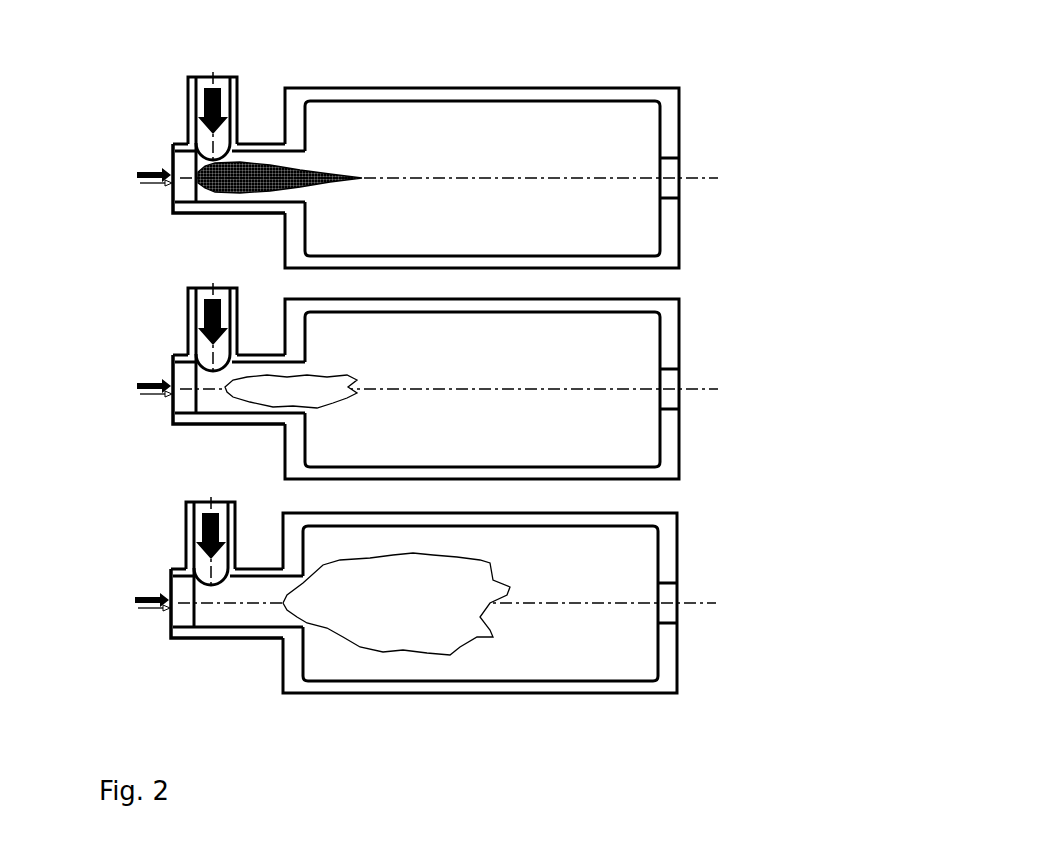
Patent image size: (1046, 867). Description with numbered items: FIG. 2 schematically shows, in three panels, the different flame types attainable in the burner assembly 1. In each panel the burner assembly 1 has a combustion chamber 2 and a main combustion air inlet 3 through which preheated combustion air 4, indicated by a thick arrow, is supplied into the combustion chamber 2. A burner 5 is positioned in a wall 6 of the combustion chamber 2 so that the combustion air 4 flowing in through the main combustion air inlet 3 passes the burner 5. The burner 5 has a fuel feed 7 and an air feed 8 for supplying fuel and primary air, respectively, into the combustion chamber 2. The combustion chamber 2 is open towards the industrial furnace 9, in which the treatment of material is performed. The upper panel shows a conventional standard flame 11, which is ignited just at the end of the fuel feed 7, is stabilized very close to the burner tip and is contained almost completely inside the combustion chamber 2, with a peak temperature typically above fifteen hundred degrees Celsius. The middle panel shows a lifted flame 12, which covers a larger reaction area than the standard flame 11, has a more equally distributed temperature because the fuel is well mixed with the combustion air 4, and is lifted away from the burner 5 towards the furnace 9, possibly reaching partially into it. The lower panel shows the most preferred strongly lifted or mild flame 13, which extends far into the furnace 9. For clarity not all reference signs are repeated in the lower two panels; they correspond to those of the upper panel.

The burner assembly 1 is at (410, 387).
The combustion chamber 2 is at (273, 200).
The main combustion air inlet 3 is at (195, 92).
The combustion air 4 is at (214, 90).
The burner 5 is at (182, 168).
The wall 6 is at (185, 210).
The fuel feed 7 is at (152, 185).
The air feed 8 is at (153, 170).
The industrial furnace 9 is at (528, 130).
The standard flame 11 is at (256, 172).
The lifted flame 12 is at (283, 392).
The strongly lifted or mild flame 13 is at (347, 608).